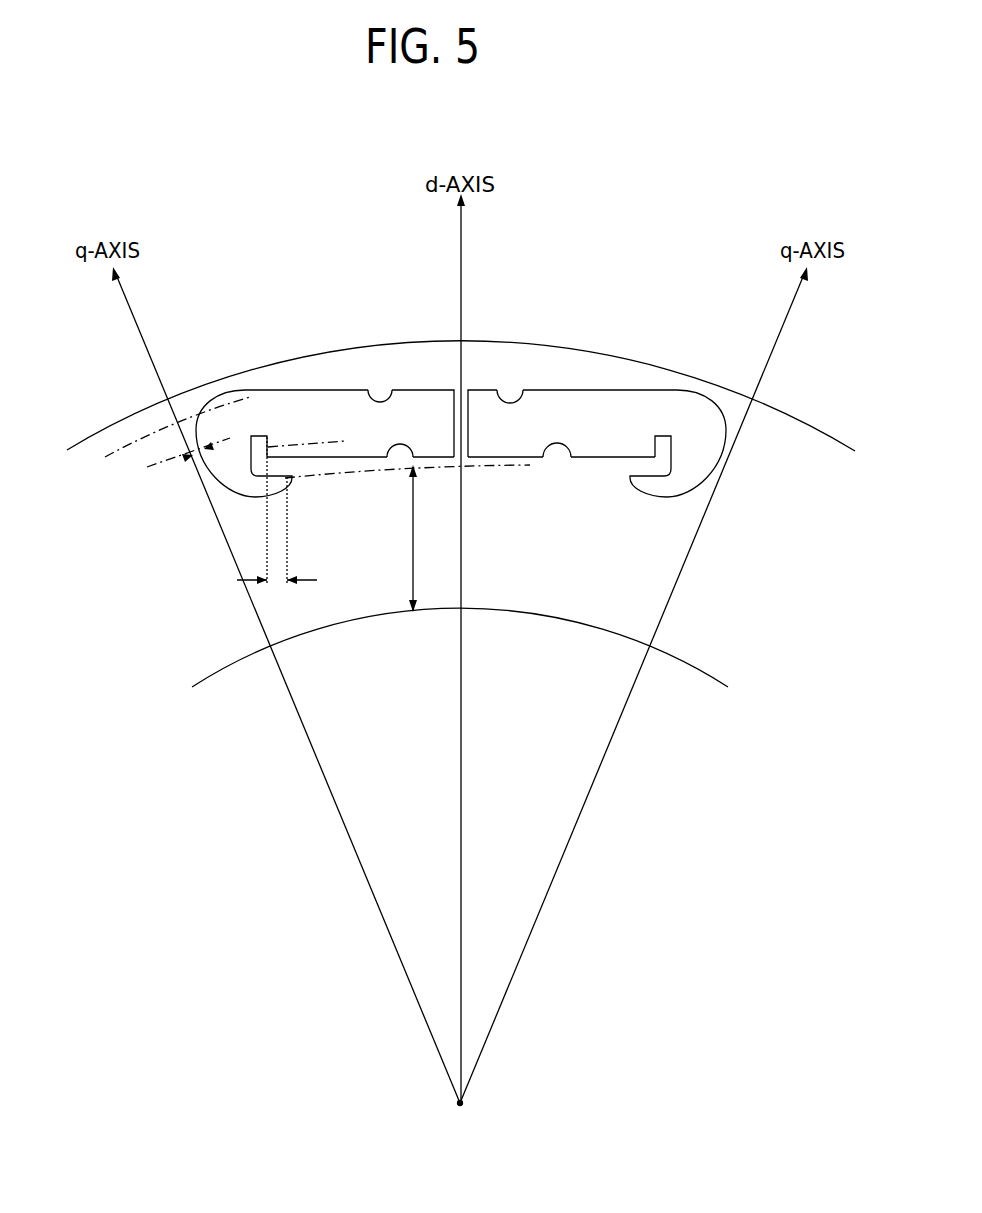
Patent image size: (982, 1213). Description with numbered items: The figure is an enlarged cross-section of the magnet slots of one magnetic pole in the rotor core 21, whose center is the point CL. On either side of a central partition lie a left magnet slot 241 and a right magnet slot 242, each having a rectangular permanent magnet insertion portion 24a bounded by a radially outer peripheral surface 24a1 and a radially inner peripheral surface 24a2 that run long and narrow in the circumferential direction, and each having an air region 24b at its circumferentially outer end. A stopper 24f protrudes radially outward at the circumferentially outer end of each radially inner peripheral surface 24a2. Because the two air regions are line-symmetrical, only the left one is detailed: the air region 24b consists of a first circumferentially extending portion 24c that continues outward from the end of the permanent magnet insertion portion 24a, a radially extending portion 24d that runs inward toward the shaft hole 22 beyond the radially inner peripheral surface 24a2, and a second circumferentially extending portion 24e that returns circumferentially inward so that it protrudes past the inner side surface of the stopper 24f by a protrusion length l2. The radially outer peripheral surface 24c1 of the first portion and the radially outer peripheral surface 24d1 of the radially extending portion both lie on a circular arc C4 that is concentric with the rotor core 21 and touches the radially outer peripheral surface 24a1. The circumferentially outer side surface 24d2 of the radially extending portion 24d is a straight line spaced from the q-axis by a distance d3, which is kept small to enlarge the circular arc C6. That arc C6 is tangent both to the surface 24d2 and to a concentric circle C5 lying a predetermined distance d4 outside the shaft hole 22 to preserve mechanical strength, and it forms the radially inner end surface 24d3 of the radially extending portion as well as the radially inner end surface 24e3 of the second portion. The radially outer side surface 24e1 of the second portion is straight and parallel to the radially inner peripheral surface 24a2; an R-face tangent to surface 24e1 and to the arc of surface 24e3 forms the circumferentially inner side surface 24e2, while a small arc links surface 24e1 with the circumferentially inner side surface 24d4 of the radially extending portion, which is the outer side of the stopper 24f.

The rotor core 21 is at (706, 388).
The shaft hole 22 is at (525, 617).
The permanent magnet insertion portion 24a is at (355, 398).
The radially outer peripheral surface 24a1 is at (374, 392).
The radially inner peripheral surface 24a2 is at (397, 470).
The magnet slot 241 is at (413, 389).
The magnet slot 242 is at (553, 386).
The air region 24b is at (193, 410).
The first circumferentially extending portion 24c is at (245, 385).
The radially outer peripheral surface 24c1 is at (248, 393).
The radially extending portion 24d is at (215, 480).
The radially outer peripheral surface 24d1 is at (223, 397).
The circumferentially outer side surface 24d2 is at (172, 427).
The radially inner end surface 24d3 is at (233, 500).
The circumferentially inner side surface 24d4 is at (228, 505).
The second circumferentially extending portion 24e is at (283, 483).
The radially outer side surface 24e1 is at (272, 445).
The circumferentially inner side surface 24e2 is at (293, 480).
The radially inner end surface 24e3 is at (285, 480).
The stopper 24f is at (250, 440).
The circular arc C4 is at (113, 425).
The concentric circle C5 is at (478, 468).
The circular arc C6 is at (321, 438).
The center CL is at (463, 1107).
The distance d3 is at (186, 451).
The predetermined distance d4 is at (427, 538).
The protrusion length l2 is at (277, 527).